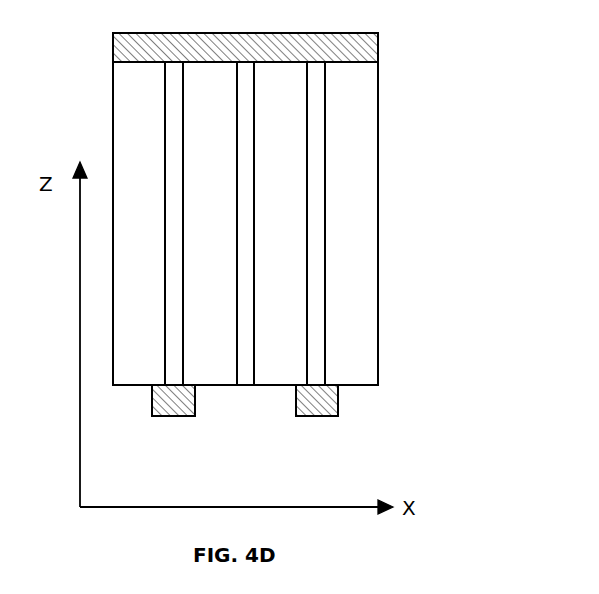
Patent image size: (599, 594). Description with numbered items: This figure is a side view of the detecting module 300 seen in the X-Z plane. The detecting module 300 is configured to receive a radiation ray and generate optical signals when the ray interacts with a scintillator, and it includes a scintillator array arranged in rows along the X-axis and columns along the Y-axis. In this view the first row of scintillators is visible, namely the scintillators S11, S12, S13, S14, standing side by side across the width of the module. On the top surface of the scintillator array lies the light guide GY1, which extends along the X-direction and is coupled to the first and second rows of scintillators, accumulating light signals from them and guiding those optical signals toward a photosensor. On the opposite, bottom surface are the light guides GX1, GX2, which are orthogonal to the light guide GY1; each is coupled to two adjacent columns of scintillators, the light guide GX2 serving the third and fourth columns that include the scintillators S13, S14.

The detecting module 300 is at (447, 192).
The light guide GY1 is at (380, 44).
The light guide GX1 is at (177, 416).
The light guide GX2 is at (310, 416).
The scintillator S11 is at (143, 223).
The scintillator S12 is at (210, 223).
The scintillator S13 is at (280, 223).
The scintillator S14 is at (345, 223).